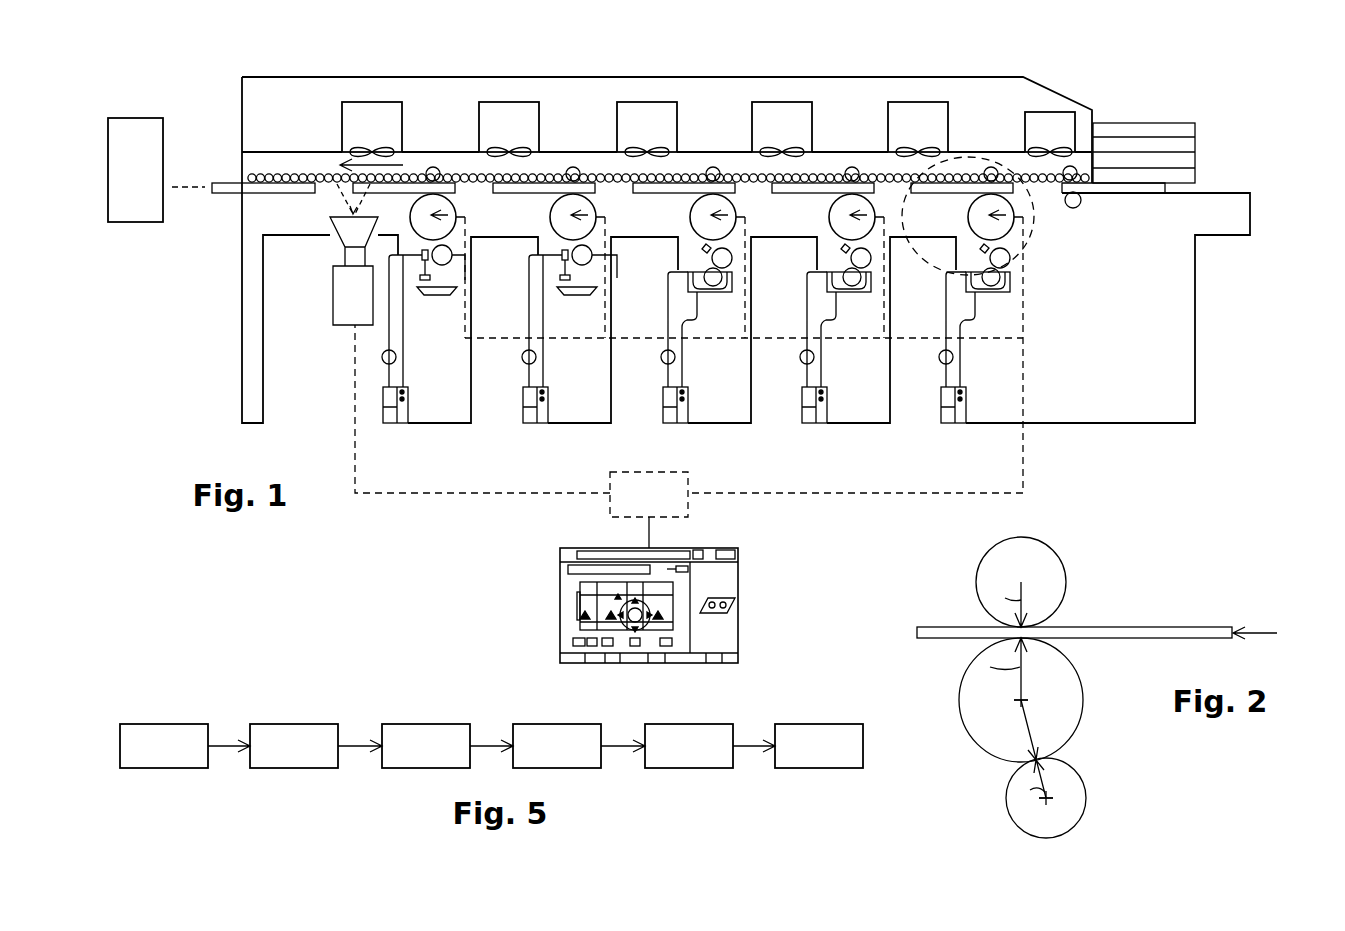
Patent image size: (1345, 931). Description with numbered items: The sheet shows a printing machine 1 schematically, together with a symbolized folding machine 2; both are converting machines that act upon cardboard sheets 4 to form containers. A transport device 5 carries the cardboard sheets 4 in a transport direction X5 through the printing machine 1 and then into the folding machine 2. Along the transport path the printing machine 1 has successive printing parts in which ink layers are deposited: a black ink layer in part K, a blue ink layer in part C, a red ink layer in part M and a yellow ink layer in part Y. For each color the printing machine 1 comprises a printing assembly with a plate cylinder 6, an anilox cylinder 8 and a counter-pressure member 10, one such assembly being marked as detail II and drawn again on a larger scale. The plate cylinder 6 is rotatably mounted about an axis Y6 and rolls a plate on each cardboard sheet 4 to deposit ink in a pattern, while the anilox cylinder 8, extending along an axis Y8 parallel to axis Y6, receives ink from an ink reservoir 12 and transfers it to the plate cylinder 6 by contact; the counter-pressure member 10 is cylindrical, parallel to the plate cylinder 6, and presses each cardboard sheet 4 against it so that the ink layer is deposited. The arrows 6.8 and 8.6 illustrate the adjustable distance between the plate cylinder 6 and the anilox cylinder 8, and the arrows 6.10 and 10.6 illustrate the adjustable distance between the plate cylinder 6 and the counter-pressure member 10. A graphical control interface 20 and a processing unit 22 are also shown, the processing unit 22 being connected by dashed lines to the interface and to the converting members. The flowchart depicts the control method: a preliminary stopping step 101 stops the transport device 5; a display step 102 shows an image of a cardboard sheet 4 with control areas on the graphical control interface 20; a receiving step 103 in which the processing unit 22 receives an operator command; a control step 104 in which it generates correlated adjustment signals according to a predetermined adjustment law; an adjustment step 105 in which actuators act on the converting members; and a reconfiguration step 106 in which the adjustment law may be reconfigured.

In FIG. 1, the printing machine 1 is at (1027, 197).
In FIG. 1, the folding machine 2 is at (127, 215).
In FIG. 1, the cardboard sheets 4 is at (222, 190).
In FIG. 2, the cardboard sheets 4 is at (1141, 630).
In FIG. 1, the transport device 5 is at (292, 178).
In FIG. 1, the plate cylinder 6 is at (553, 212).
In FIG. 2, the plate cylinder 6 is at (1060, 664).
In FIG. 1, the anilox cylinder 8 is at (731, 262).
In FIG. 2, the anilox cylinder 8 is at (1067, 777).
In FIG. 1, the counter-pressure member 10 is at (713, 170).
In FIG. 2, the counter-pressure member 10 is at (1043, 573).
In FIG. 1, the ink reservoir 12 is at (990, 280).
In FIG. 1, the graphical control interface 20 is at (540, 578).
In FIG. 1, the processing unit 22 is at (649, 510).
In FIG. 1, the transport direction X5 is at (353, 165).
In FIG. 2, the transport direction X5 is at (1271, 633).
In FIG. 1, the detail II is at (1004, 216).
In FIG. 1, the black ink part K is at (578, 392).
In FIG. 1, the blue ink part C is at (718, 392).
In FIG. 1, the red ink part M is at (857, 392).
In FIG. 1, the yellow ink part Y is at (996, 392).
In FIG. 2, the distance arrow 10.6 is at (1013, 595).
In FIG. 2, the distance arrow 6.10 is at (1020, 667).
In FIG. 2, the plate cylinder axis Y6 is at (1021, 700).
In FIG. 2, the distance arrow 6.8 is at (1030, 736).
In FIG. 2, the distance arrow 8.6 is at (1045, 792).
In FIG. 2, the anilox cylinder axis Y8 is at (1046, 798).
In FIG. 5, the preliminary stopping step 101 is at (164, 746).
In FIG. 5, the display step 102 is at (294, 746).
In FIG. 5, the receiving step 103 is at (426, 746).
In FIG. 5, the control step 104 is at (557, 746).
In FIG. 5, the adjustment step 105 is at (689, 746).
In FIG. 5, the reconfiguration step 106 is at (819, 746).